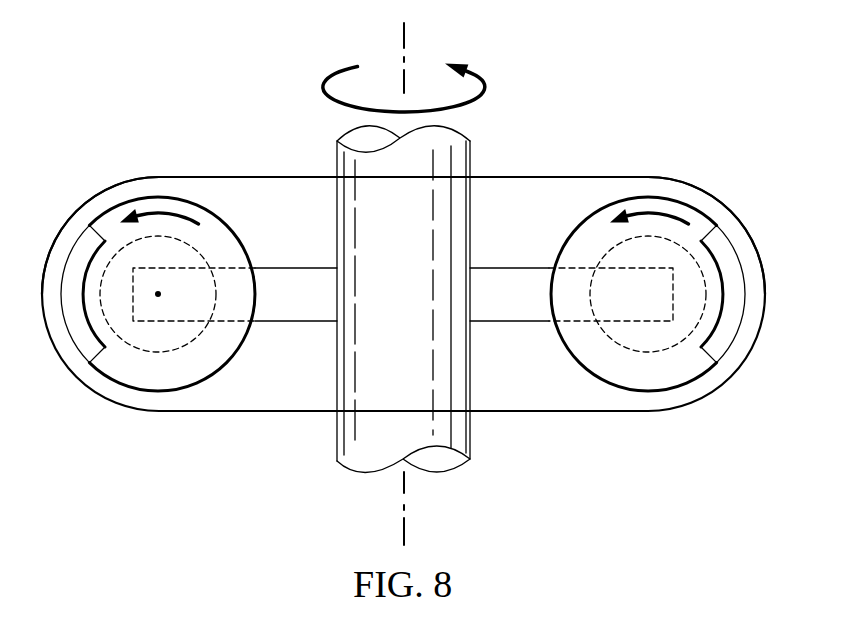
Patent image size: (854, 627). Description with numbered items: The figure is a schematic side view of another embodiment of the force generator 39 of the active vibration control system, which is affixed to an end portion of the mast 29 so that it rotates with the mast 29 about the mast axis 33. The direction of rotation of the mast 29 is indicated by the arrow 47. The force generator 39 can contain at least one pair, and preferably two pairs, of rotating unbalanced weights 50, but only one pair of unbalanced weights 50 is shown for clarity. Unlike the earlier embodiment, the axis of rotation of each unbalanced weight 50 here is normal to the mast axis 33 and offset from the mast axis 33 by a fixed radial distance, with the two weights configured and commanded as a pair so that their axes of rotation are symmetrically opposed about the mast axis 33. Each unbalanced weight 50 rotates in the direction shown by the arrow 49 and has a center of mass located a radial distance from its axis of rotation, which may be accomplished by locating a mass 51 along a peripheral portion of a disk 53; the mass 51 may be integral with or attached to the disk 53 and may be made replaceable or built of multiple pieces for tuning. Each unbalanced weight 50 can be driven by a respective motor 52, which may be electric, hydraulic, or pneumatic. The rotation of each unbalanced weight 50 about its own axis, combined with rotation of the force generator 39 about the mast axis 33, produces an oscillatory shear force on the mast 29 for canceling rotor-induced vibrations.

The mast 29 is at (470, 428).
The mast axis 33 is at (405, 532).
The force generator 39 is at (202, 412).
The arrow 47 is at (485, 86).
The arrow 49 is at (162, 217).
The unbalanced weight 50 is at (97, 200).
The mass 51 is at (72, 325).
The motor 52 is at (200, 337).
The disk 53 is at (243, 237).